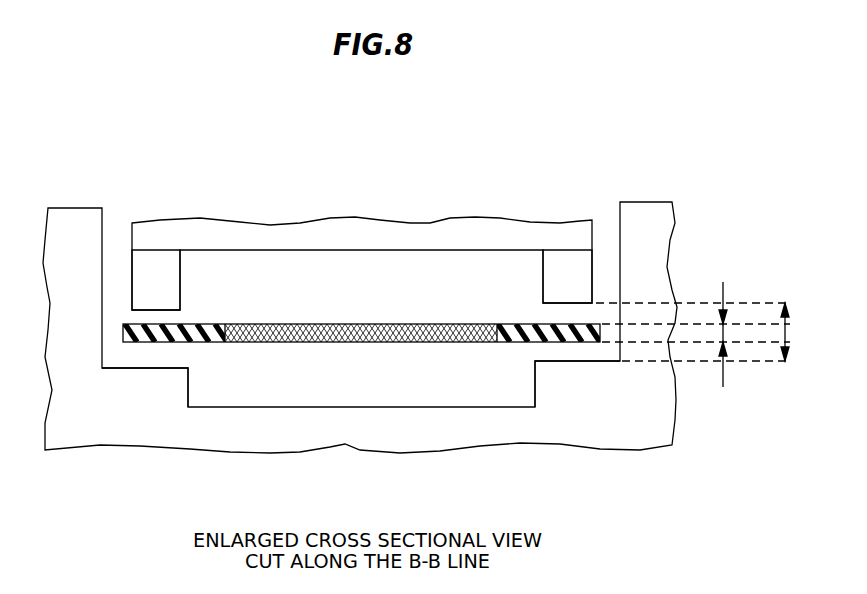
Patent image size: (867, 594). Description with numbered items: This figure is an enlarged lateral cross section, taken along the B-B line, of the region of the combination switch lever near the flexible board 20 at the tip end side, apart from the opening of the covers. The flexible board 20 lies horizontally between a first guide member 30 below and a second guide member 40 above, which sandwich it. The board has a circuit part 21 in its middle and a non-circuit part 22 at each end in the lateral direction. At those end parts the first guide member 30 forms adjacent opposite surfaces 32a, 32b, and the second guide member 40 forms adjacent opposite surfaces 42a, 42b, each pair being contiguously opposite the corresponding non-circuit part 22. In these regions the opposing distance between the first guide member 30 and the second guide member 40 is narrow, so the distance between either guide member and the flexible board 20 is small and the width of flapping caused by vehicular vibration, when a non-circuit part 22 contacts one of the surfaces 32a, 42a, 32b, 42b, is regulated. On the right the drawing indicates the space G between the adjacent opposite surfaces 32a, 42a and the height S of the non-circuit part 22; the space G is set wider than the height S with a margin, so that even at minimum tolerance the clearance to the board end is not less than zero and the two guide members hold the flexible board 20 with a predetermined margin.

The flexible board 20 is at (353, 242).
The circuit part 21 is at (355, 324).
The non-circuit part 22 is at (217, 327).
The first guide member 30 is at (362, 430).
The adjacent opposite surface 32a is at (575, 363).
The adjacent opposite surface 32b is at (140, 372).
The second guide member 40 is at (452, 236).
The adjacent opposite surface 42a is at (570, 303).
The adjacent opposite surface 42b is at (157, 305).
The height of the non-circuit part S is at (693, 334).
The space between the adjacent opposite surfaces G is at (795, 332).